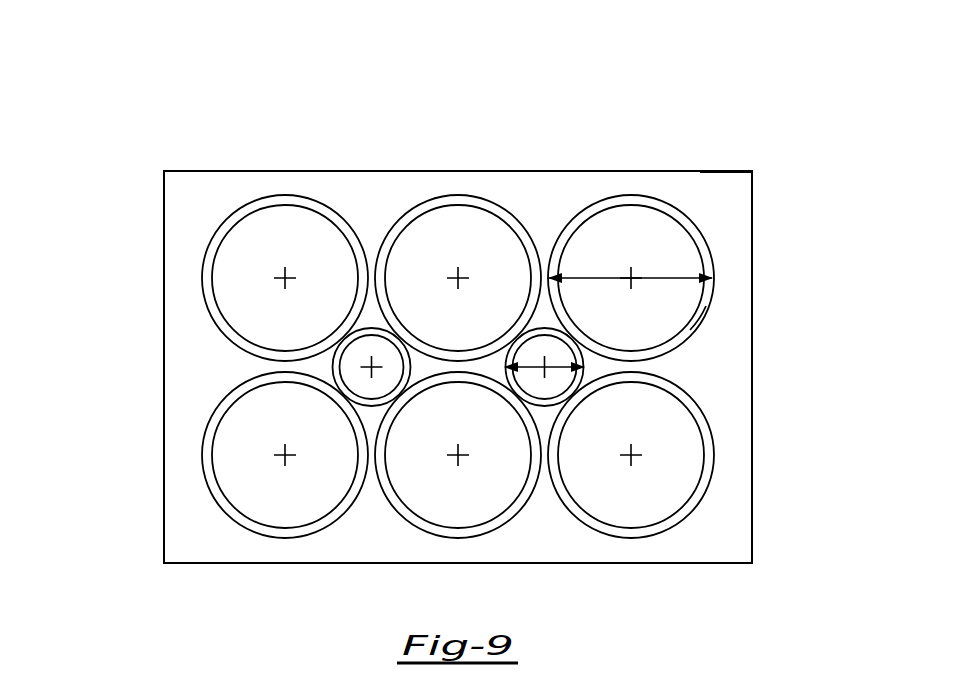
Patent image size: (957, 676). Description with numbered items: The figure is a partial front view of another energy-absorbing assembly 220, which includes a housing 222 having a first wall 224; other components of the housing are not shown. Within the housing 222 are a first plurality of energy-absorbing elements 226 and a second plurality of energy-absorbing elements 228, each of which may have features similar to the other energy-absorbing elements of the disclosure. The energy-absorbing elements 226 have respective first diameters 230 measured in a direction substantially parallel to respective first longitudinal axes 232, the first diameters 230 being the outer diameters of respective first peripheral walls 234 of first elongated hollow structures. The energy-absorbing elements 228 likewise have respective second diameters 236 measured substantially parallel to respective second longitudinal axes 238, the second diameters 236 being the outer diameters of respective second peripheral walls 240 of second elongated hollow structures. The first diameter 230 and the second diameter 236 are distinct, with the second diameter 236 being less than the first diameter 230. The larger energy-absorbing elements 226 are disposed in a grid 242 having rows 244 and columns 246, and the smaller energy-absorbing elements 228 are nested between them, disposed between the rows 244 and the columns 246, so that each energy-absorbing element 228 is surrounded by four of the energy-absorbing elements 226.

The energy-absorbing assembly 220 is at (723, 68).
The housing 222 is at (743, 168).
The first wall 224 is at (717, 185).
The first plurality of energy-absorbing elements 226 is at (317, 202).
The second plurality of energy-absorbing elements 228 is at (332, 366).
The first diameter 230 is at (660, 278).
The first longitudinal axis 232 is at (631, 278).
The first peripheral wall 234 is at (706, 306).
The second diameter 236 is at (534, 362).
The second longitudinal axis 238 is at (544, 367).
The second peripheral wall 240 is at (580, 371).
The grid 242 is at (727, 478).
The rows 244 is at (140, 278).
The columns 246 is at (285, 137).